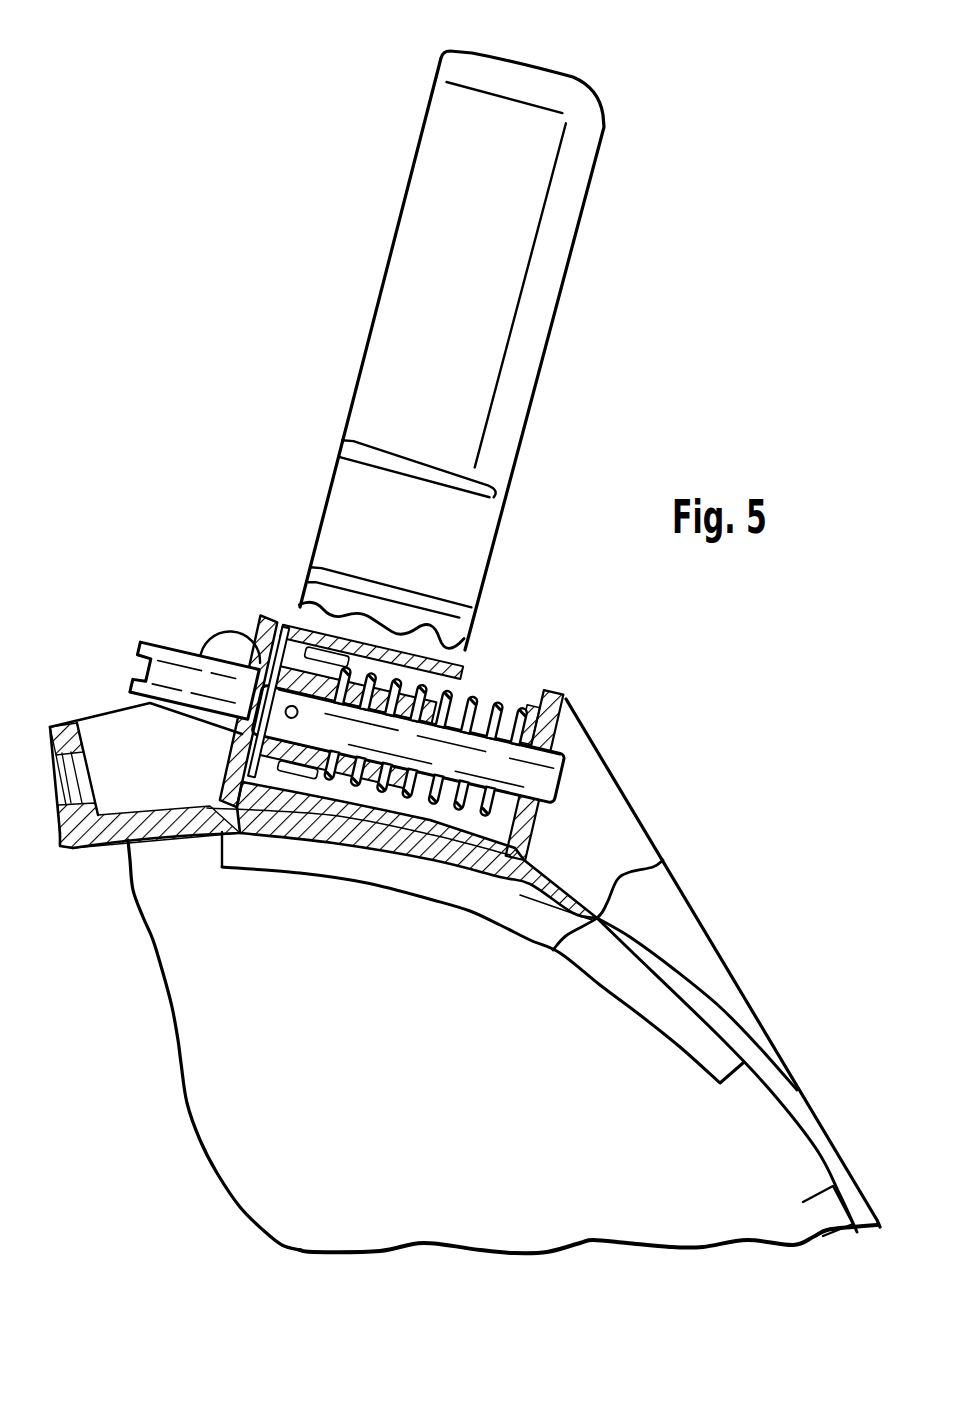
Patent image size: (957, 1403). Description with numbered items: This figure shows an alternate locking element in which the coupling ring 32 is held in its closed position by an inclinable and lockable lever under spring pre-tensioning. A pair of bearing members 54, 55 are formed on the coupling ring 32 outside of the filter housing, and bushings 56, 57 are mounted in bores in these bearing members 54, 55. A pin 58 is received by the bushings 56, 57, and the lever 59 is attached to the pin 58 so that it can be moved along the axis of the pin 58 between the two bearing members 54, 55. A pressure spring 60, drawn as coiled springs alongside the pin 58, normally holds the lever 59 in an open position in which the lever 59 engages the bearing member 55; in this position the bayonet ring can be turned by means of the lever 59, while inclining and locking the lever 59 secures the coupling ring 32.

The coupling ring 32 is at (790, 1093).
The bearing member 54 is at (560, 698).
The bearing member 55 is at (250, 658).
The bushing 56 is at (560, 740).
The bushing 57 is at (205, 658).
The pin 58 is at (543, 775).
The lever 59 is at (507, 438).
The pressure spring 60 is at (500, 703).